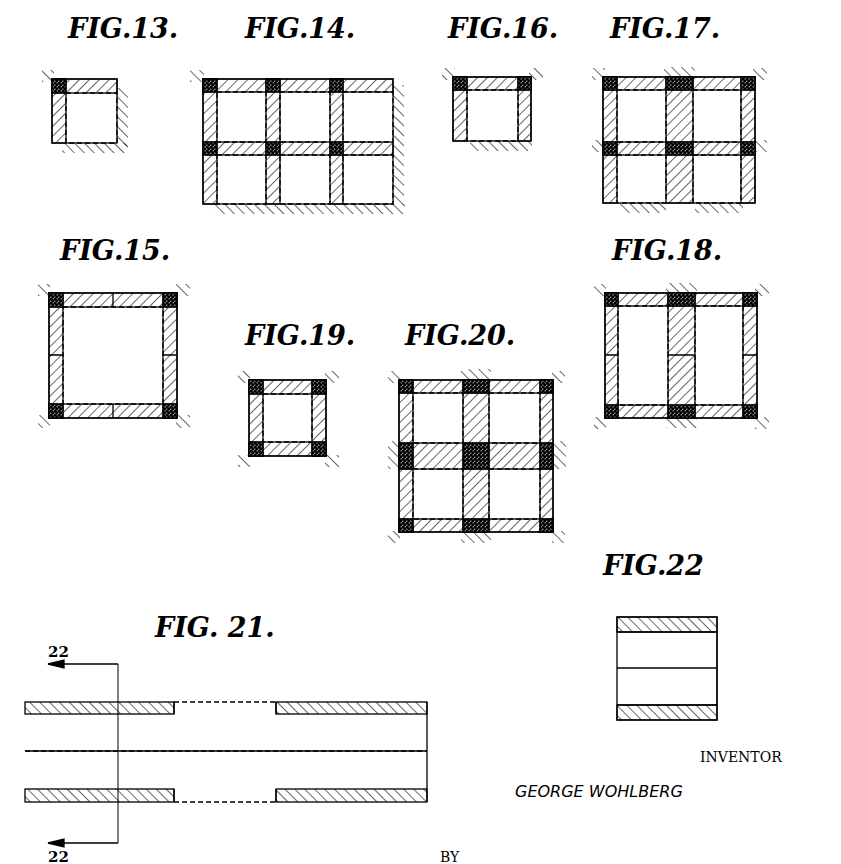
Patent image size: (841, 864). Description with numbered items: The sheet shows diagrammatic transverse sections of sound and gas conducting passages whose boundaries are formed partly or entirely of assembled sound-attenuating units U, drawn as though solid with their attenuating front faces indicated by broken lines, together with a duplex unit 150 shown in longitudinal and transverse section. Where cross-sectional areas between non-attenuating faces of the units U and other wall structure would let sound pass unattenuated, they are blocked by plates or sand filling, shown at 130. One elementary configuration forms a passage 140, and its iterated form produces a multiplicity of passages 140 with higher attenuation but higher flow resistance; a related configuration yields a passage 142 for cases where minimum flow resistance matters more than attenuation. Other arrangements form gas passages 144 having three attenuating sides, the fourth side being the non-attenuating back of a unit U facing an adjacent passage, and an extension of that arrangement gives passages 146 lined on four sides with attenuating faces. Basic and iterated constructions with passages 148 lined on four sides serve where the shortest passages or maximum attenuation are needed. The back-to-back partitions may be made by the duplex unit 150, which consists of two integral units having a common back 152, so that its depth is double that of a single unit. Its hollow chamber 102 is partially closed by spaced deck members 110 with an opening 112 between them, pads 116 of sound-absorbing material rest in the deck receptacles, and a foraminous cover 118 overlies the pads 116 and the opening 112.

In FIG. 13, the sound-attenuating unit U is at (100, 83).
In FIG. 14, the sound-attenuating unit U is at (262, 83).
In FIG. 16, the sound-attenuating unit U is at (505, 82).
In FIG. 17, the sound-attenuating unit U is at (660, 80).
In FIG. 15, the sound-attenuating unit U is at (90, 295).
In FIG. 19, the sound-attenuating unit U is at (295, 383).
In FIG. 20, the sound-attenuating unit U is at (440, 385).
In FIG. 18, the sound-attenuating unit U is at (645, 296).
In FIG. 13, the sand-filled or plate-blocked area 130 is at (60, 82).
In FIG. 14, the sand-filled or plate-blocked area 130 is at (232, 62).
In FIG. 16, the sand-filled or plate-blocked area 130 is at (460, 80).
In FIG. 17, the sand-filled or plate-blocked area 130 is at (680, 79).
In FIG. 15, the sand-filled or plate-blocked area 130 is at (56, 295).
In FIG. 19, the sand-filled or plate-blocked area 130 is at (258, 382).
In FIG. 20, the sand-filled or plate-blocked area 130 is at (415, 368).
In FIG. 18, the sand-filled or plate-blocked area 130 is at (610, 295).
In FIG. 13, the passage 140 is at (108, 122).
In FIG. 14, the passage 140 is at (337, 80).
In FIG. 15, the passage 142 is at (152, 352).
In FIG. 16, the gas passage 144 is at (510, 135).
In FIG. 17, the gas passage 144 is at (740, 108).
In FIG. 18, the passage 146 is at (727, 330).
In FIG. 19, the passage 148 is at (290, 415).
In FIG. 20, the passage 148 is at (452, 400).
In FIG. 21, the cavity or chamber 102 is at (400, 710).
In FIG. 22, the cavity or chamber 102 is at (707, 652).
In FIG. 21, the deck member 110 is at (160, 714).
In FIG. 22, the deck member 110 is at (630, 632).
In FIG. 21, the opening 112 is at (200, 702).
In FIG. 21, the pad of sound-absorbing material 116 is at (342, 702).
In FIG. 22, the pad of sound-absorbing material 116 is at (700, 620).
In FIG. 21, the foraminous cover 118 is at (265, 702).
In FIG. 21, the duplex unit 150 is at (434, 727).
In FIG. 21, the common back 152 is at (245, 751).
In FIG. 22, the common back 152 is at (684, 656).